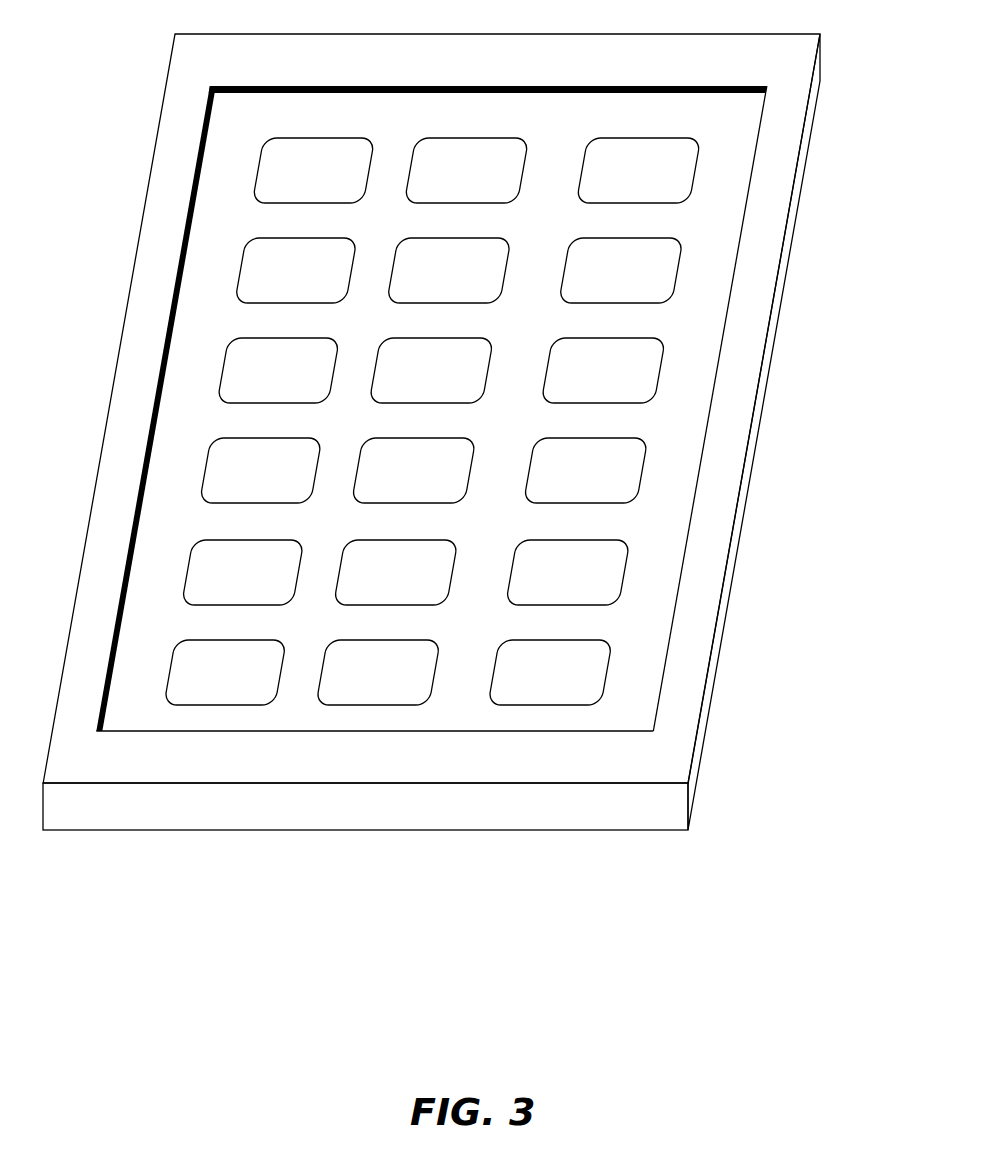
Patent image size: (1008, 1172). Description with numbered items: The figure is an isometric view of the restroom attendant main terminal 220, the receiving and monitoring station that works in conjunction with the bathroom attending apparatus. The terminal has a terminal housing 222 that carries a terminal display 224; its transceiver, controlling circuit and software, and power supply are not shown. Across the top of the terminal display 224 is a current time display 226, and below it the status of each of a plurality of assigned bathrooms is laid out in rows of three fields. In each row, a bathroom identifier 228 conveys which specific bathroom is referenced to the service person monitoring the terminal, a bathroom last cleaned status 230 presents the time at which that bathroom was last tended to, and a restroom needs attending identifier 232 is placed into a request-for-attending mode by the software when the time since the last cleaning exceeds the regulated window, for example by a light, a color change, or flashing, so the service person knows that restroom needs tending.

The restroom attendant main terminal 220 is at (484, 439).
The terminal housing 222 is at (232, 57).
The terminal display 224 is at (687, 397).
The current time display 226 is at (488, 110).
The bathroom identifier 228 is at (412, 688).
The bathroom last cleaned status 230 is at (631, 247).
The restroom needs attending identifier 232 is at (310, 180).